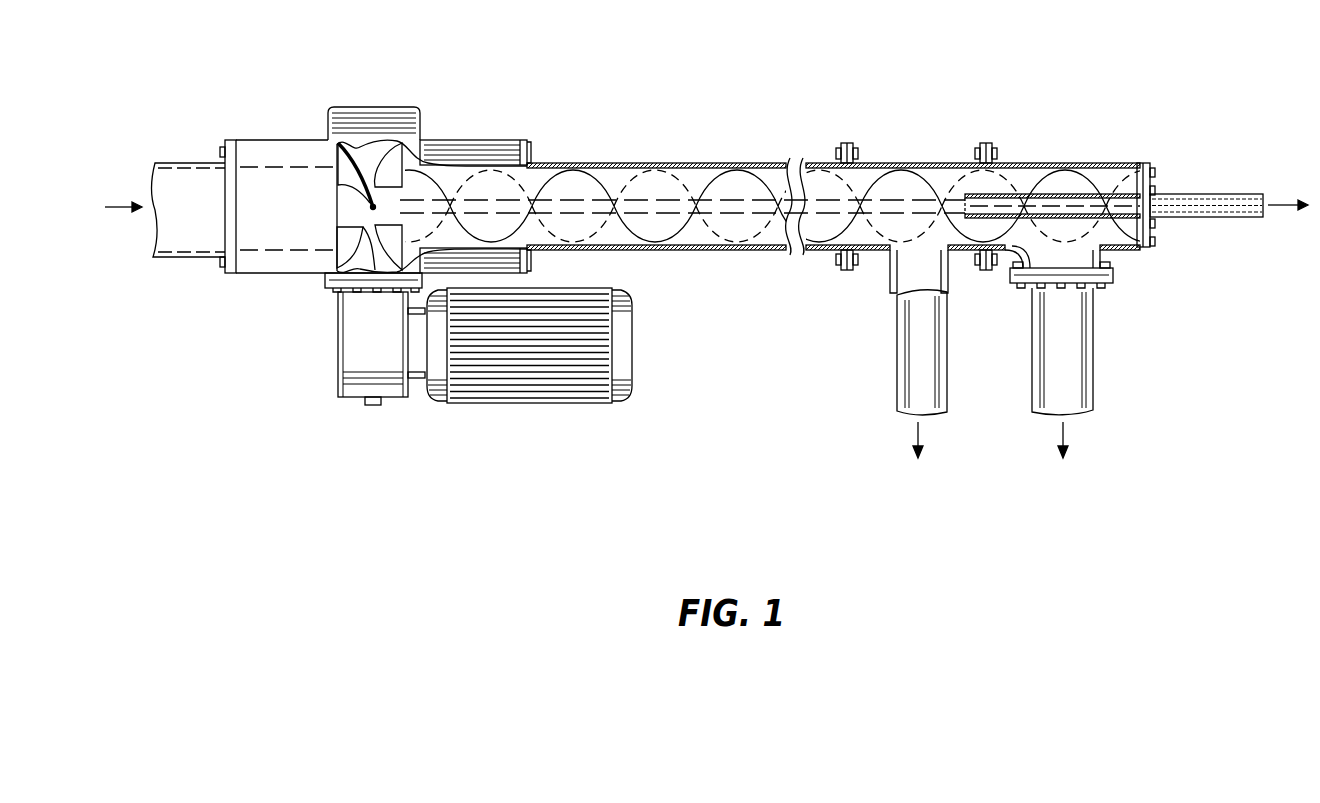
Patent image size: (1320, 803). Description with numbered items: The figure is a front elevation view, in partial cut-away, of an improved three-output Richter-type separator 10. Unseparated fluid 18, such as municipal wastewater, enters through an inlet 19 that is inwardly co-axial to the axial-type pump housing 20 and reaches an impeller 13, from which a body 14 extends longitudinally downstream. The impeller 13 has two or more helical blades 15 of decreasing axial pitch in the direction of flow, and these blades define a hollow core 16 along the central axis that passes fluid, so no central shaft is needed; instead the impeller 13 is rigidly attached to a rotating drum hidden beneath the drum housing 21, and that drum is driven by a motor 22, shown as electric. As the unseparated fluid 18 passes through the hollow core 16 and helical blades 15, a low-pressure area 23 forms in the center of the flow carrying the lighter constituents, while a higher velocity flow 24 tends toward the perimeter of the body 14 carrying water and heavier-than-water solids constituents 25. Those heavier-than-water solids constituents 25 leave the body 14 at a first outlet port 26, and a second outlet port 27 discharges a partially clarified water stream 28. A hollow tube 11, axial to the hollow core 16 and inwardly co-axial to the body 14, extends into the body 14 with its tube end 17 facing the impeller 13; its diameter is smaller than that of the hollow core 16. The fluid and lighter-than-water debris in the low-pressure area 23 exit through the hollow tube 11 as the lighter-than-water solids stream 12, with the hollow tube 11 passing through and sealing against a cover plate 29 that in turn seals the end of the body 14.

The three-output Richter-type separator 10 is at (789, 70).
The hollow tube 11 is at (1175, 196).
The lighter-than-water solids stream 12 is at (1283, 207).
The impeller 13 is at (328, 255).
The body 14 is at (553, 163).
The helical blades 15 is at (353, 152).
The hollow core 16 is at (360, 219).
The tube end 17 is at (965, 216).
The unseparated fluid 18 is at (110, 205).
The inlet 19 is at (163, 258).
The axial-type pump housing 20 is at (455, 140).
The drum housing 21 is at (338, 372).
The motor 22 is at (632, 335).
The low-pressure area 23 is at (660, 195).
The higher velocity flow 24 is at (922, 168).
The heavier-than-water solids constituents 25 is at (928, 428).
The first outlet port 26 is at (893, 346).
The second outlet port 27 is at (1095, 312).
The partially clarified water stream 28 is at (1070, 428).
The cover plate 29 is at (1153, 172).